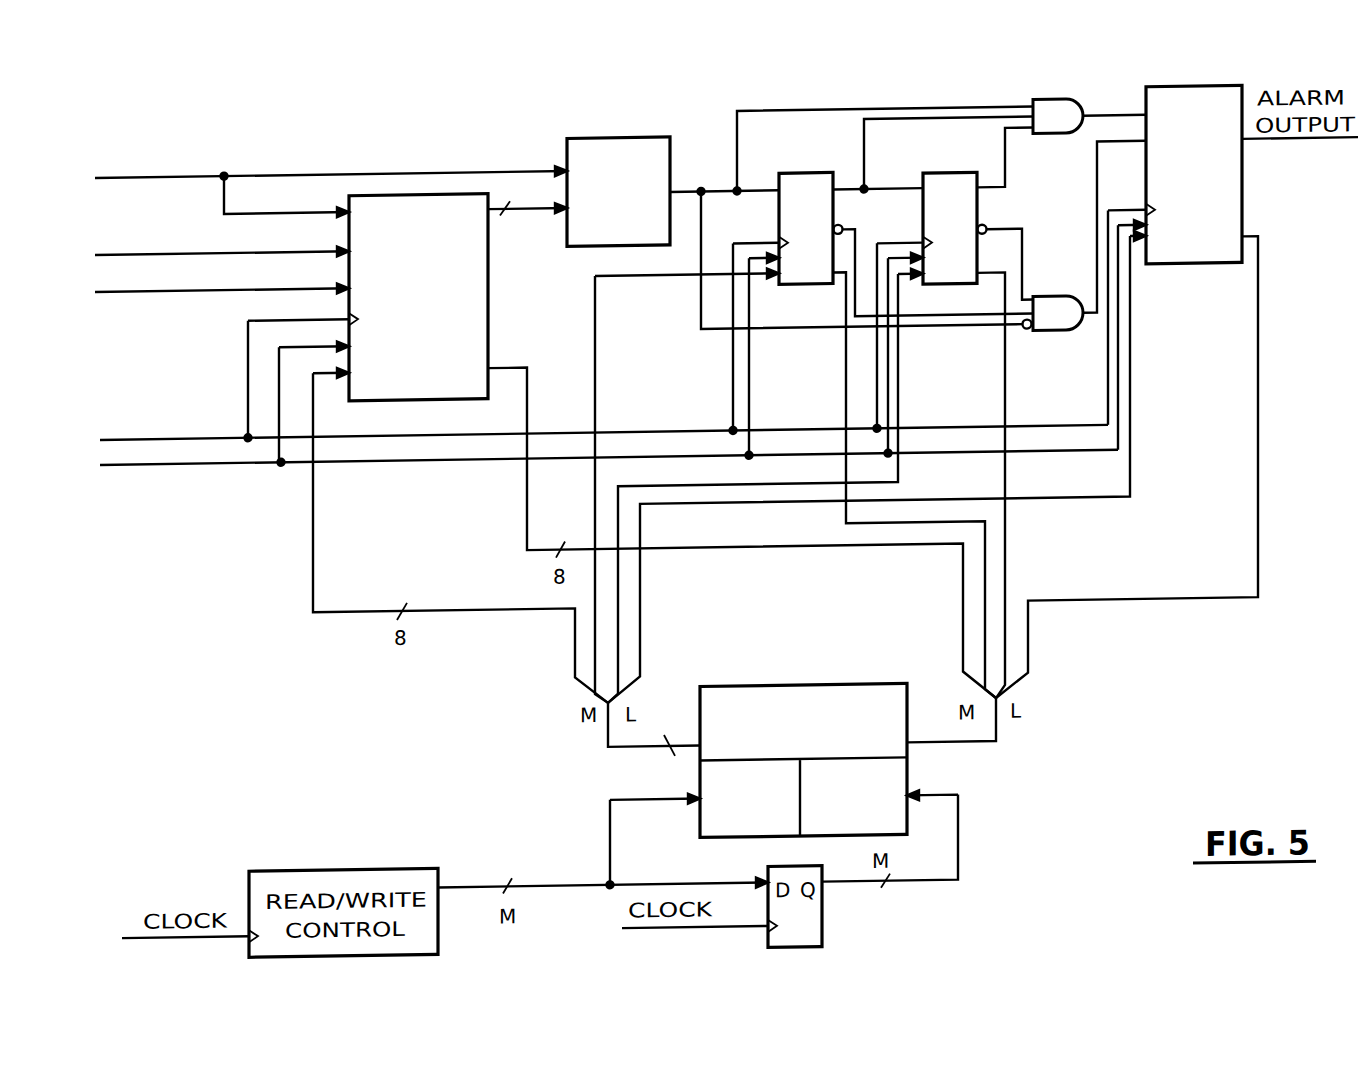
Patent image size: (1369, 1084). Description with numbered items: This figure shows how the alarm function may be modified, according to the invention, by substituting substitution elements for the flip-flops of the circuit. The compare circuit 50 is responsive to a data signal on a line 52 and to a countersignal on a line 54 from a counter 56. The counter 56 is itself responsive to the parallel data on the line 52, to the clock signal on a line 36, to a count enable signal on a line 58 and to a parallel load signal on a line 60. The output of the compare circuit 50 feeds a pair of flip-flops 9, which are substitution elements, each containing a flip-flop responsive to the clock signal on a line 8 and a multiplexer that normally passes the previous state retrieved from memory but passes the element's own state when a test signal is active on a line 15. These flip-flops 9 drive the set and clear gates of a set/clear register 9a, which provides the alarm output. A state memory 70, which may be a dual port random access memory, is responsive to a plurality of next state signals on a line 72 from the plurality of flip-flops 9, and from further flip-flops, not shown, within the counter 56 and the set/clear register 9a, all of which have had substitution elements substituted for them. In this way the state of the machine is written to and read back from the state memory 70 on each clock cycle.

The clock signal line 8 is at (197, 190).
The data signal line 52 is at (297, 179).
The parallel load signal line 60 is at (99, 254).
The count enable signal line 58 is at (110, 296).
The counter 56 is at (488, 342).
The countersignal line 54 is at (541, 220).
The compare circuit 50 is at (630, 145).
The substitution element 9 is at (806, 184).
The set/clear register 9a is at (1243, 213).
The clock signal line 36 is at (227, 442).
The test signal line 15 is at (226, 473).
The state memory 70 is at (812, 697).
The next state signal line 72 is at (998, 743).